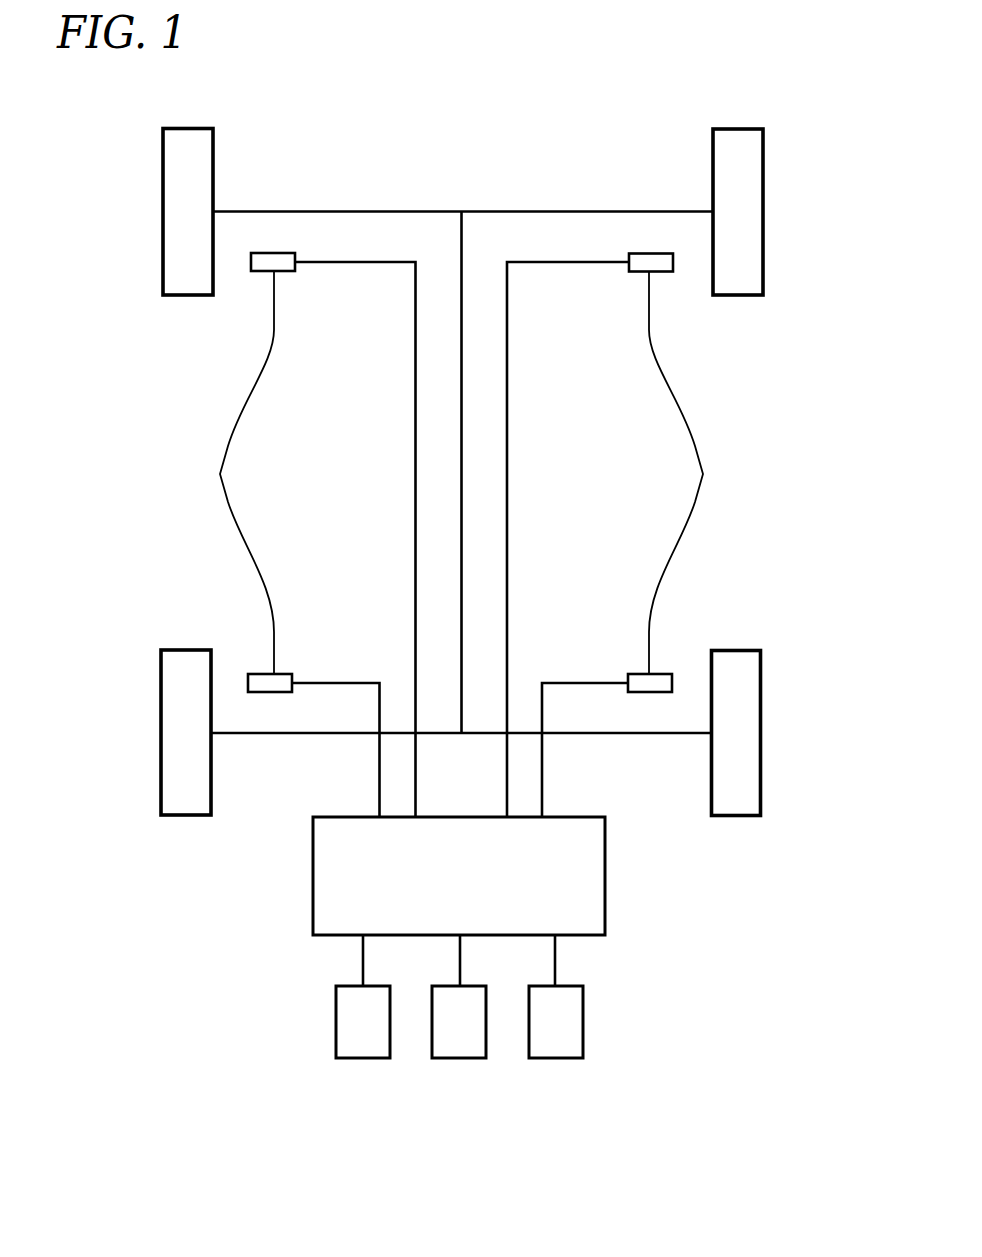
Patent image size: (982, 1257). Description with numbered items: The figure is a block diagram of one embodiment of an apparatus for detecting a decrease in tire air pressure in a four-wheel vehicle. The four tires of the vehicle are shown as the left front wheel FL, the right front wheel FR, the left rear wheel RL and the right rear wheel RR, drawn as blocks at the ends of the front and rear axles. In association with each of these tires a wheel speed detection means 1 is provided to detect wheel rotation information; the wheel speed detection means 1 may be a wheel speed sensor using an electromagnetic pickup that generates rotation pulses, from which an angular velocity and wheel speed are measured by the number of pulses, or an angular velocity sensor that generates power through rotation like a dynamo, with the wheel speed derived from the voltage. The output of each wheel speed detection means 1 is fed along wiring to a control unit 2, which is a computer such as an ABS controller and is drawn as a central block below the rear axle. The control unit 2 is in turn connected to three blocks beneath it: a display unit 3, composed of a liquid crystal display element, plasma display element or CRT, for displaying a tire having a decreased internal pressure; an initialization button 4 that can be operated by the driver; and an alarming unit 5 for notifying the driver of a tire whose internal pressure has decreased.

The wheel speed detection means 1 is at (463, 472).
The control unit 2 is at (605, 882).
The display unit 3 is at (363, 1058).
The initialization button 4 is at (460, 1058).
The alarming unit 5 is at (555, 1058).
The left front wheel FL is at (163, 188).
The right front wheel FR is at (763, 188).
The left rear wheel RL is at (161, 710).
The right rear wheel RR is at (761, 710).